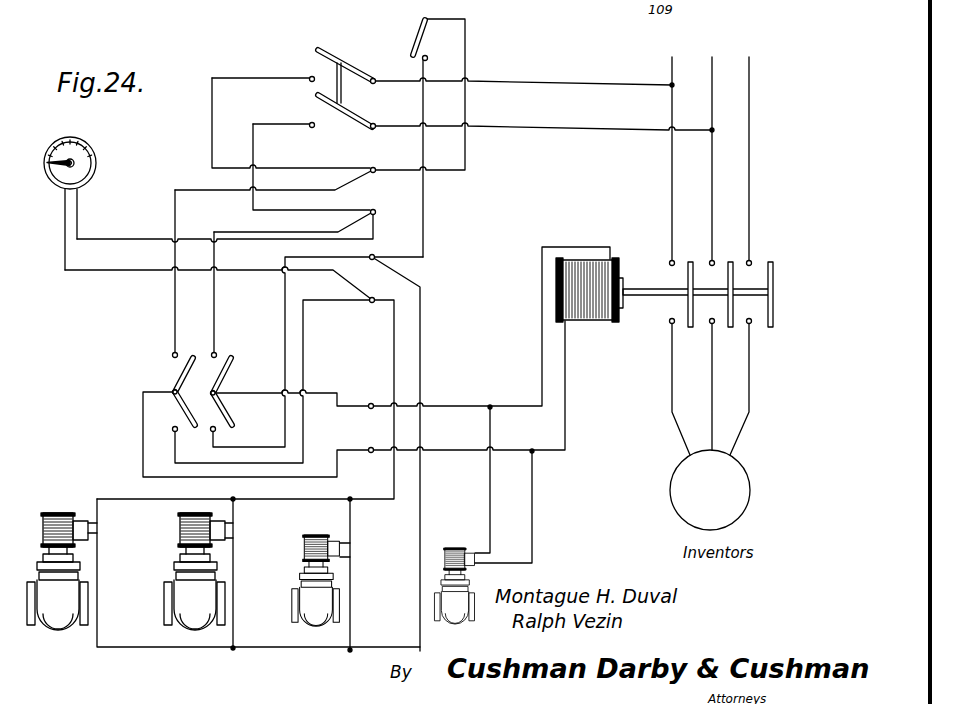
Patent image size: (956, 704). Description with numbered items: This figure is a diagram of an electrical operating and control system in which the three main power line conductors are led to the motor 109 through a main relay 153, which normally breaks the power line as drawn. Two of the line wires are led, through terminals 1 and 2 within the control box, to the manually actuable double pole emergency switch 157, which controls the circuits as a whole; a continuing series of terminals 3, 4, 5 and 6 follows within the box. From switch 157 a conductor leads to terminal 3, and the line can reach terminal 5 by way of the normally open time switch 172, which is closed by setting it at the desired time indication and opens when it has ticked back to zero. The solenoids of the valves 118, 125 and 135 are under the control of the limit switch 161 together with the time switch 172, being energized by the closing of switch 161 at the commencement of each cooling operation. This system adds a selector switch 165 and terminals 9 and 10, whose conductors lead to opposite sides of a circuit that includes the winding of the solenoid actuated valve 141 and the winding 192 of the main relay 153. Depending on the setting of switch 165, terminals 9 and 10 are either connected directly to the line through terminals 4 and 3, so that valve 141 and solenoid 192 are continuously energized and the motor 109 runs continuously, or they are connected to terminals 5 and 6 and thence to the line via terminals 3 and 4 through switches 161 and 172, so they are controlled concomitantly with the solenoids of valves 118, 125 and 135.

The time switch 172 is at (96, 166).
The double pole emergency switch 157 is at (345, 58).
The limit switch 161 is at (418, 23).
The selector switch 165 is at (172, 378).
The winding of the main relay 192 is at (600, 320).
The main relay 153 is at (757, 322).
The motor 109 is at (670, 500).
The solenoid actuated valve 125 is at (62, 618).
The solenoid actuated valve 135 is at (185, 602).
The solenoid actuated valve 118 is at (315, 609).
The solenoid actuated valve 141 is at (450, 611).
The terminal 1 is at (377, 74).
The terminal 2 is at (377, 119).
The terminal 3 is at (374, 162).
The terminal 4 is at (374, 205).
The terminal 5 is at (375, 250).
The terminal 6 is at (373, 293).
The contact 9 is at (372, 399).
The contact 10 is at (371, 443).